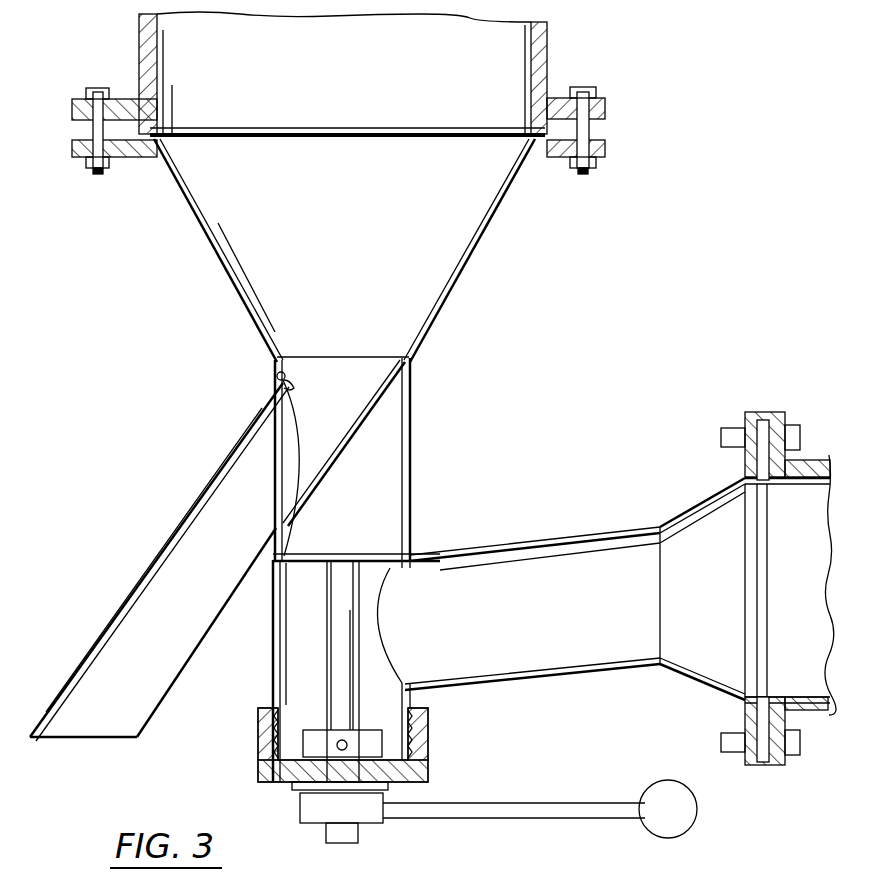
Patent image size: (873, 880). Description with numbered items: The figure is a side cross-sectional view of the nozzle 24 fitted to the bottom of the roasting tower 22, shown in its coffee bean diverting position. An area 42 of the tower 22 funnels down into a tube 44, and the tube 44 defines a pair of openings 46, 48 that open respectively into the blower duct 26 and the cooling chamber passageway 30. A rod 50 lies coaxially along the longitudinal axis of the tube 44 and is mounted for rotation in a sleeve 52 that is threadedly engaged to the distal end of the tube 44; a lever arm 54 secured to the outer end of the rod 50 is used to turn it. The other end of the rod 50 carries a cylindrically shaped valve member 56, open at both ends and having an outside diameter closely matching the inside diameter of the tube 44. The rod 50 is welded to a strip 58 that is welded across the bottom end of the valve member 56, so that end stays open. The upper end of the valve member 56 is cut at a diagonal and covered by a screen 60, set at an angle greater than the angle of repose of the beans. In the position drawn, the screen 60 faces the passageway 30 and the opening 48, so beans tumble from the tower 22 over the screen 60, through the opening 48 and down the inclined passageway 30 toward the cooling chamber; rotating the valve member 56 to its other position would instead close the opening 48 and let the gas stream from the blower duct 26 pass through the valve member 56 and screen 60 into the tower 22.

The tower 22 is at (140, 38).
The nozzle 24 is at (208, 268).
The area 42 is at (465, 267).
The opening 48 is at (276, 376).
The screen 60 is at (362, 419).
The valve member 56 is at (414, 431).
The strip 58 is at (380, 560).
The blower duct 26 is at (540, 542).
The cooling chamber passageway 30 is at (133, 588).
The rod 50 is at (327, 628).
The tube 44 is at (275, 656).
The opening 46 is at (416, 680).
The sleeve 52 is at (258, 762).
The lever arm 54 is at (600, 800).